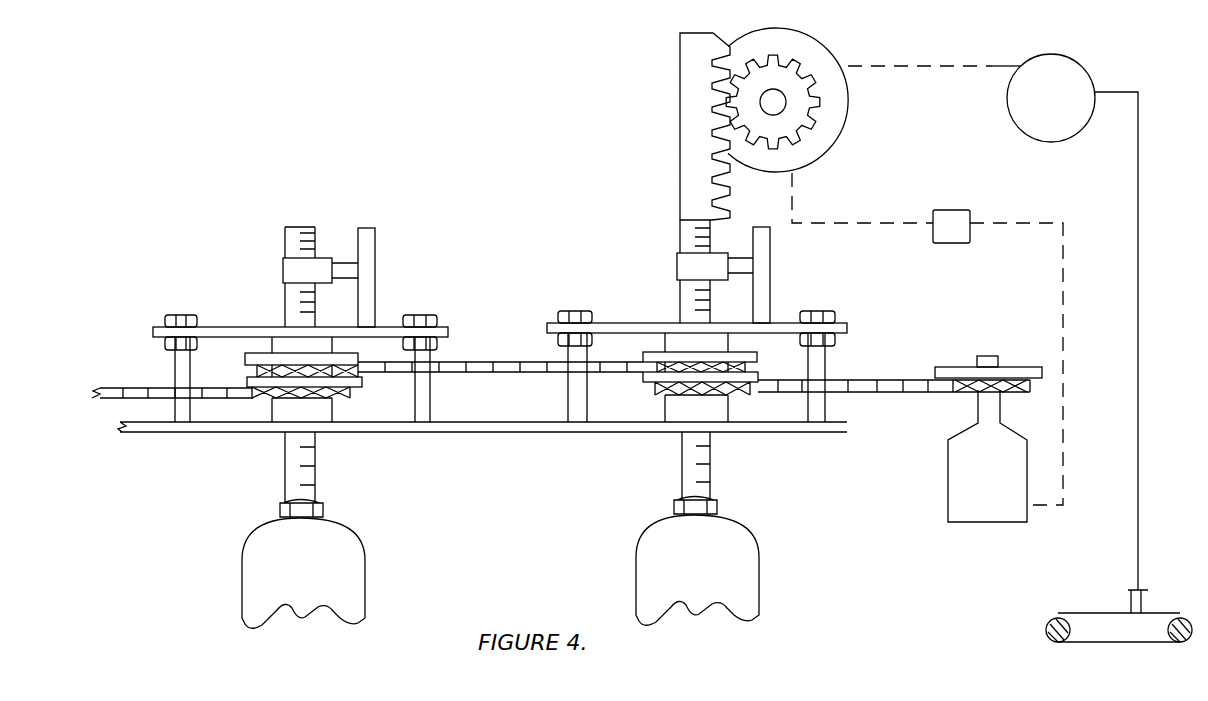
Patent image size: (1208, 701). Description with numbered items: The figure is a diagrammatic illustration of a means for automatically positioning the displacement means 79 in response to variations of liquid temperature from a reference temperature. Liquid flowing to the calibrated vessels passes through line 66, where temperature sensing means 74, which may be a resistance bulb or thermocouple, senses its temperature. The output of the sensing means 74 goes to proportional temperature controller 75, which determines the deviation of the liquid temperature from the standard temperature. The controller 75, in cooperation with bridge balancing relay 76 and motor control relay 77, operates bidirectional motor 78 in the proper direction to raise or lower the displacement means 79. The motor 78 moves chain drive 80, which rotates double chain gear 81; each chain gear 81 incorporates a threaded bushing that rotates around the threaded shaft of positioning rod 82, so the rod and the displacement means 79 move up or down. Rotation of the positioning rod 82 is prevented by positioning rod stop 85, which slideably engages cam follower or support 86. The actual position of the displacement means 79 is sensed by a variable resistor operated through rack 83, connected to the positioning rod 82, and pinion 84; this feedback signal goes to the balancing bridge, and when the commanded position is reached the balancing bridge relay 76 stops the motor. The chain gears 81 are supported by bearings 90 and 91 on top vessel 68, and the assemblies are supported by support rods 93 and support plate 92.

The line 66 is at (1176, 618).
The top vessel 68 is at (500, 424).
The temperature sensing means 74 is at (1130, 598).
The proportional temperature controller 75 is at (1083, 78).
The bridge balancing relay 76 is at (848, 62).
The motor control relay 77 is at (947, 213).
The bidirectional motor 78 is at (968, 490).
The displacement means 79 is at (345, 556).
The chain drive 80 is at (110, 397).
The double chain gear 81 is at (358, 357).
The positioning rod 82 is at (285, 242).
The rack 83 is at (685, 84).
The pinion 84 is at (779, 58).
The positioning rod stop 85 is at (283, 272).
The cam follower or support 86 is at (372, 267).
The bearing 90 is at (272, 348).
The bearing 91 is at (332, 411).
The support plate 92 is at (255, 327).
The support rods 93 is at (180, 432).